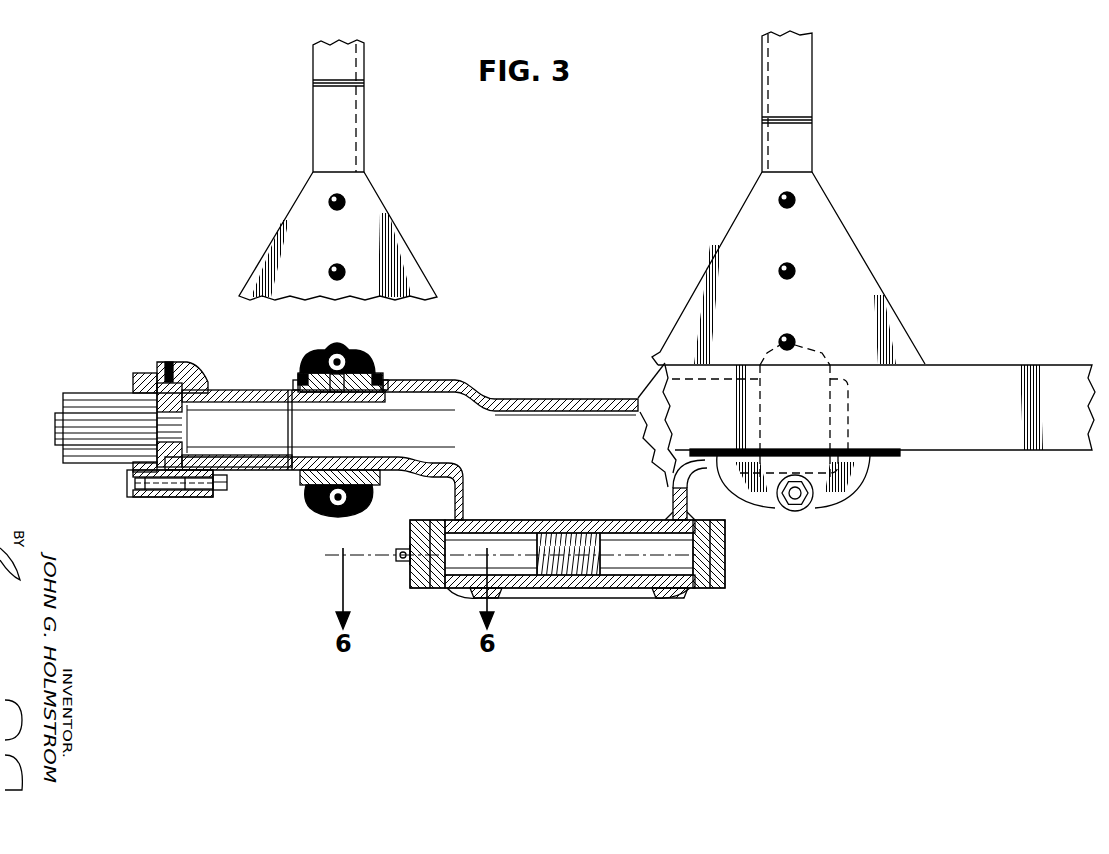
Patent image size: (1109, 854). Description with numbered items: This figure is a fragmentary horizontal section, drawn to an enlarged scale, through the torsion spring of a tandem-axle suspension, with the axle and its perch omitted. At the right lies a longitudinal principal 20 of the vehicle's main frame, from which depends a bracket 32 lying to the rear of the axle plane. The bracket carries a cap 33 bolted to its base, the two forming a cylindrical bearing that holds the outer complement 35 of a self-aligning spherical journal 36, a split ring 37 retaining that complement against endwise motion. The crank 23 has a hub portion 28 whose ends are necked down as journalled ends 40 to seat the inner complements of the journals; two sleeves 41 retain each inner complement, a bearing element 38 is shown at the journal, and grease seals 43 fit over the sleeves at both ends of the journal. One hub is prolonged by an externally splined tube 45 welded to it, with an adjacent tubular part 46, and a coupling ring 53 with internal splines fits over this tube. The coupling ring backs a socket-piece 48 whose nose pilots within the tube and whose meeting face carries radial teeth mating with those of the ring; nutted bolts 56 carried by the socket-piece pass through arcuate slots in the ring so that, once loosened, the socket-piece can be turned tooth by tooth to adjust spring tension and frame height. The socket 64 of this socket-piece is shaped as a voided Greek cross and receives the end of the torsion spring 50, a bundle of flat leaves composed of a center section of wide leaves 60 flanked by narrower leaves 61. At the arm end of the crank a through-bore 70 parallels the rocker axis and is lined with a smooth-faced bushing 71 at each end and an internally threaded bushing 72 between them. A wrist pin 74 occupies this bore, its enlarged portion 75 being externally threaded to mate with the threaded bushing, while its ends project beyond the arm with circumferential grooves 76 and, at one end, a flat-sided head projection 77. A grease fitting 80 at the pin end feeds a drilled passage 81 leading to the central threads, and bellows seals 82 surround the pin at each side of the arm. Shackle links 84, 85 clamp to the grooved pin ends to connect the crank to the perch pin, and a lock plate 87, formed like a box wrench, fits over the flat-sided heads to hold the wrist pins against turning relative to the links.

The longitudinal principal 20 is at (972, 364).
The crank 23 is at (689, 491).
The hub portion 28 is at (450, 380).
The bracket 32 is at (845, 494).
The cap 33 is at (341, 352).
The outer complement 35 is at (356, 374).
The self-aligning spherical journal 36 is at (362, 504).
The split ring 37 is at (316, 366).
The bearing housing 38 is at (355, 394).
The journalled end 40 is at (322, 396).
The sleeve 41 is at (297, 383).
The grease seal 43 is at (298, 374).
The externally splined tube 45 is at (277, 470).
The tubular sleeve 46 is at (232, 383).
The socket-piece 48 is at (148, 497).
The torsion spring 50 is at (84, 390).
The coupling ring 53 is at (200, 497).
The nutted bolt 56 is at (228, 489).
The wide leaf 60 is at (57, 428).
The narrower leaf 61 is at (63, 399).
The socket 64 is at (142, 390).
The through-bore 70 is at (620, 588).
The smooth-faced bushing 71 is at (500, 596).
The internally threaded bushing 72 is at (585, 535).
The wrist pin 74 is at (625, 540).
The enlarged portion 75 is at (540, 555).
The circumferential groove 76 is at (426, 590).
The head projection 77 is at (400, 562).
The grease fitting 80 is at (396, 554).
The drilled passage 81 is at (510, 546).
The bellows seal 82 is at (448, 594).
The shackle link 84 is at (428, 522).
The shackle link 85 is at (727, 577).
The lock plate 87 is at (410, 580).